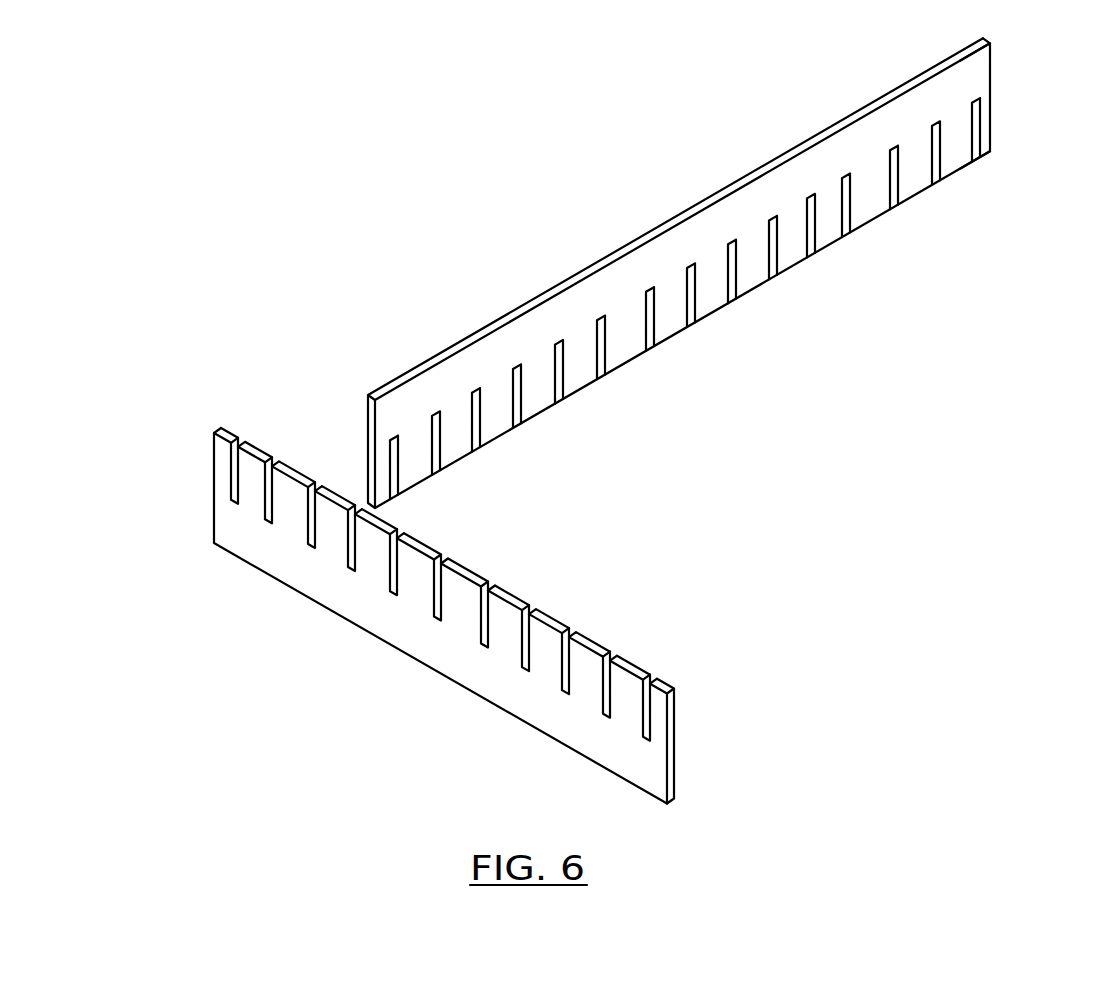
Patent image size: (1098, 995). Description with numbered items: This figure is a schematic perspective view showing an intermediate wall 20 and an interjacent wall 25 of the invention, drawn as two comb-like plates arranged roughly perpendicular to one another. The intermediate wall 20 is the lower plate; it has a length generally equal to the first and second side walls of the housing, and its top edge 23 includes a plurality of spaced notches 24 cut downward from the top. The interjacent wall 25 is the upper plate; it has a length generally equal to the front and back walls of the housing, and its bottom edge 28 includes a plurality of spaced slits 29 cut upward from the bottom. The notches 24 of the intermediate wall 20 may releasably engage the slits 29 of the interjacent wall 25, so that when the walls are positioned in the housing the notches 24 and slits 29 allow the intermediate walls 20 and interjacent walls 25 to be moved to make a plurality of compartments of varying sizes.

The intermediate wall 20 is at (489, 616).
The top edge 23 is at (668, 690).
The notch 24 is at (607, 687).
The interjacent wall 25 is at (716, 273).
The bottom edge 28 is at (953, 173).
The slit 29 is at (805, 250).